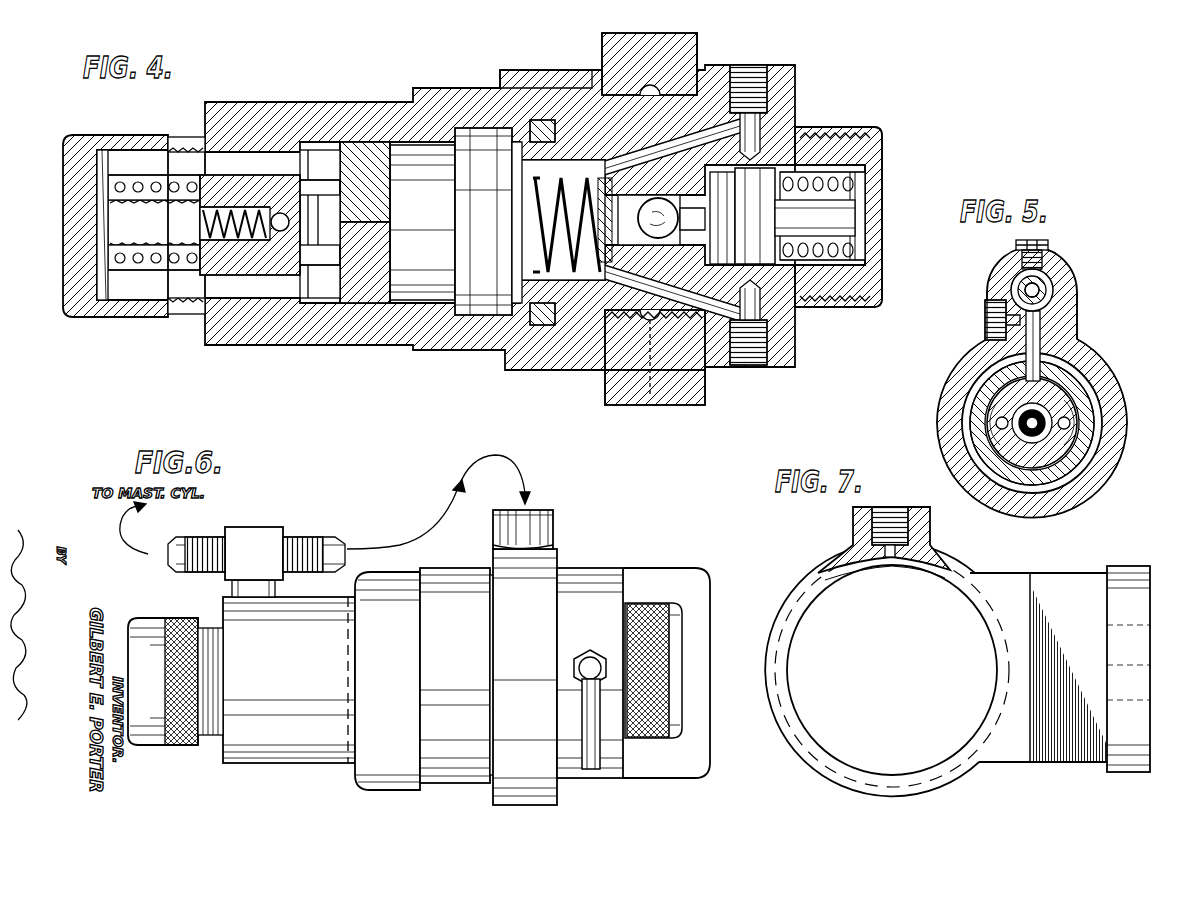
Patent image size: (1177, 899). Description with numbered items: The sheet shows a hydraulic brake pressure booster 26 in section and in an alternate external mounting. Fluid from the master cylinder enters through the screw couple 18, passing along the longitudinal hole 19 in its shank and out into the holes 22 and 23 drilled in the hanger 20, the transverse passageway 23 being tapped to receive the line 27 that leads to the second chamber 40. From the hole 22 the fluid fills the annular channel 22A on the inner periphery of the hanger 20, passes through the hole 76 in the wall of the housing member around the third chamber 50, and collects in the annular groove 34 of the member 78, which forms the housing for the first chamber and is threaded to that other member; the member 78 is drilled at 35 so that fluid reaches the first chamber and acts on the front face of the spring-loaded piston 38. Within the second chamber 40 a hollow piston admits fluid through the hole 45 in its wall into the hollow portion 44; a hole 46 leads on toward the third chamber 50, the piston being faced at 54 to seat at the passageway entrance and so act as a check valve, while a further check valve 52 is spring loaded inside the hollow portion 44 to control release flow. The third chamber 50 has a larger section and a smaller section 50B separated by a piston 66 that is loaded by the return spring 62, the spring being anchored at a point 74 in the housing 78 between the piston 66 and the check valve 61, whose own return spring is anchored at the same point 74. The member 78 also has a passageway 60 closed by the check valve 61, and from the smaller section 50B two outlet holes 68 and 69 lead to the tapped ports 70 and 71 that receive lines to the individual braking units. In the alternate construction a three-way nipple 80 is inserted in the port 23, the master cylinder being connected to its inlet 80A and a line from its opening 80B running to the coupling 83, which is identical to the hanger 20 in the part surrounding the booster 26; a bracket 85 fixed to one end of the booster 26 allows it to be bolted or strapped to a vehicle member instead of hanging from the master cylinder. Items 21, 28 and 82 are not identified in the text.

In FIG. 5, the screw couple 18 is at (1048, 268).
In FIG. 5, the longitudinal hole 19 is at (1053, 290).
In FIG. 4, the hanger 20 is at (668, 408).
In FIG. 5, the hanger 20 is at (1080, 308).
In FIG. 5, the pin 21 is at (1025, 278).
In FIG. 5, the hole 22 is at (1040, 330).
In FIG. 4, the annular channel 22A is at (645, 400).
In FIG. 5, the annular channel 22A is at (1090, 385).
In FIG. 4, the transverse hole 23 is at (134, 226).
In FIG. 5, the transverse hole 23 is at (990, 302).
In FIG. 6, the pressure booster 26 is at (322, 766).
In FIG. 4, the line 27 is at (455, 352).
In FIG. 6, the knob fitting 28 is at (235, 594).
In FIG. 4, the annular groove 34 is at (640, 362).
In FIG. 5, the annular groove 34 is at (942, 402).
In FIG. 4, the hole 35 is at (672, 240).
In FIG. 4, the piston 38 is at (765, 180).
In FIG. 4, the second chamber 40 is at (294, 185).
In FIG. 4, the hollow portion 44 is at (215, 242).
In FIG. 4, the hole 45 is at (250, 228).
In FIG. 4, the hole 46 is at (300, 240).
In FIG. 4, the third chamber 50 is at (372, 140).
In FIG. 4, the smaller section 50B is at (588, 70).
In FIG. 4, the check valve 52 is at (285, 232).
In FIG. 4, the face 54 is at (288, 150).
In FIG. 5, the passageway 60 is at (1072, 508).
In FIG. 5, the check valve 61 is at (1023, 440).
In FIG. 4, the return spring 62 is at (545, 170).
In FIG. 5, the piston 66 is at (1026, 432).
In FIG. 4, the outlet hole 68 is at (712, 110).
In FIG. 5, the outlet hole 68 is at (995, 424).
In FIG. 4, the outlet hole 69 is at (640, 295).
In FIG. 5, the outlet hole 69 is at (1070, 420).
In FIG. 4, the port 70 is at (750, 66).
In FIG. 4, the port 71 is at (745, 368).
In FIG. 4, the anchor point 74 is at (540, 325).
In FIG. 5, the hole 76 is at (986, 338).
In FIG. 4, the member 78 is at (800, 320).
In FIG. 5, the member 78 is at (1097, 450).
In FIG. 6, the three-way nipple 80 is at (258, 527).
In FIG. 6, the inlet 80A is at (208, 537).
In FIG. 6, the opening 80B is at (305, 537).
In FIG. 6, the boss 82 is at (553, 527).
In FIG. 7, the boss 82 is at (853, 520).
In FIG. 6, the coupling 83 is at (562, 556).
In FIG. 7, the coupling 83 is at (772, 630).
In FIG. 6, the bracket 85 is at (686, 546).
In FIG. 7, the bracket 85 is at (1122, 566).